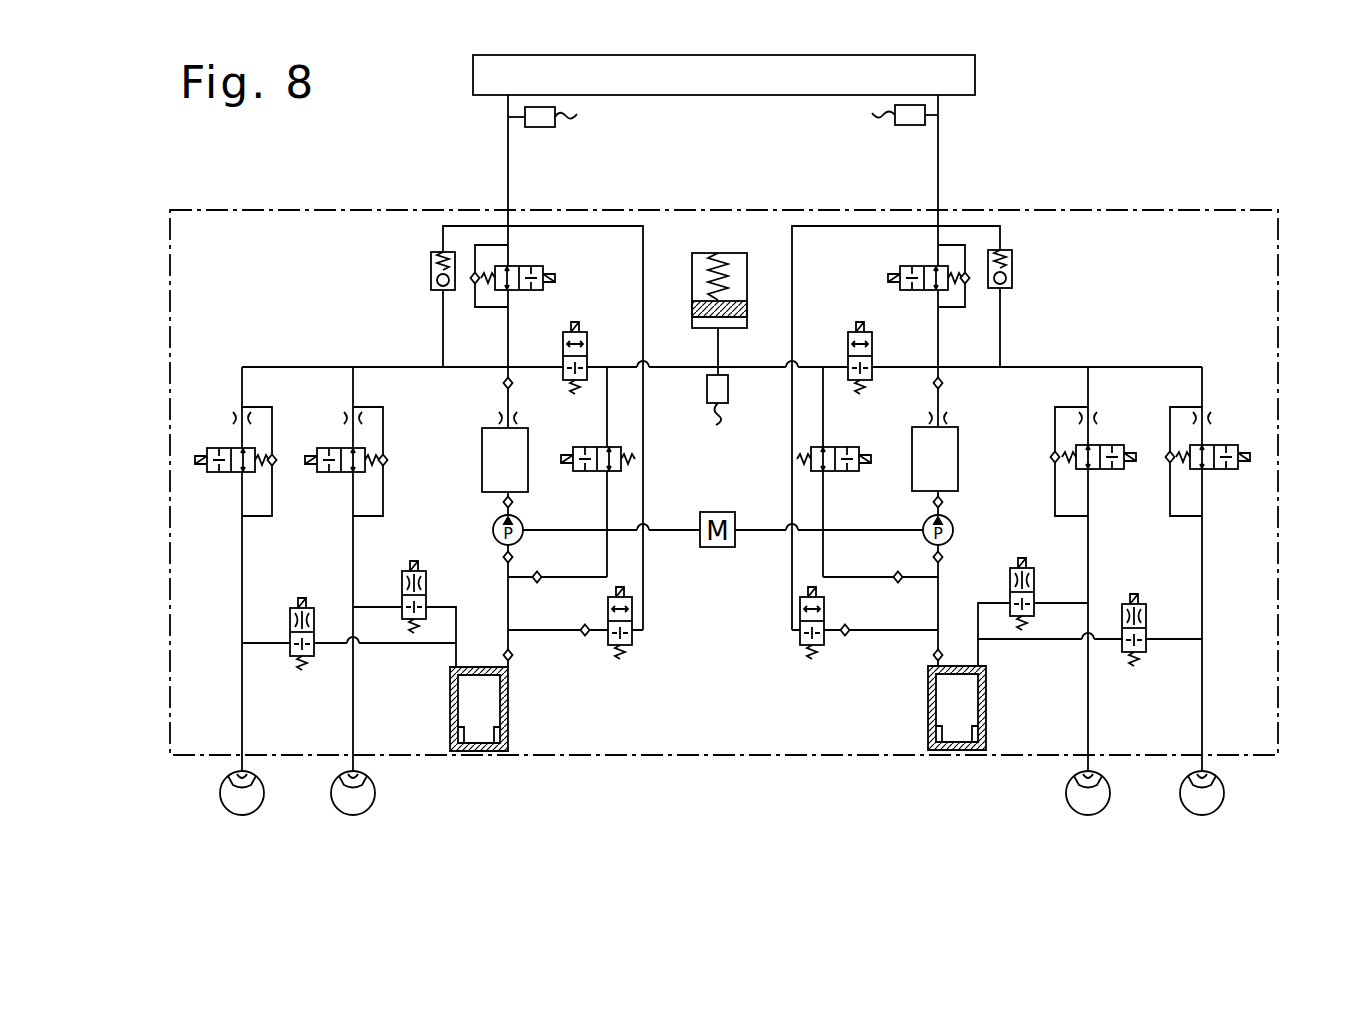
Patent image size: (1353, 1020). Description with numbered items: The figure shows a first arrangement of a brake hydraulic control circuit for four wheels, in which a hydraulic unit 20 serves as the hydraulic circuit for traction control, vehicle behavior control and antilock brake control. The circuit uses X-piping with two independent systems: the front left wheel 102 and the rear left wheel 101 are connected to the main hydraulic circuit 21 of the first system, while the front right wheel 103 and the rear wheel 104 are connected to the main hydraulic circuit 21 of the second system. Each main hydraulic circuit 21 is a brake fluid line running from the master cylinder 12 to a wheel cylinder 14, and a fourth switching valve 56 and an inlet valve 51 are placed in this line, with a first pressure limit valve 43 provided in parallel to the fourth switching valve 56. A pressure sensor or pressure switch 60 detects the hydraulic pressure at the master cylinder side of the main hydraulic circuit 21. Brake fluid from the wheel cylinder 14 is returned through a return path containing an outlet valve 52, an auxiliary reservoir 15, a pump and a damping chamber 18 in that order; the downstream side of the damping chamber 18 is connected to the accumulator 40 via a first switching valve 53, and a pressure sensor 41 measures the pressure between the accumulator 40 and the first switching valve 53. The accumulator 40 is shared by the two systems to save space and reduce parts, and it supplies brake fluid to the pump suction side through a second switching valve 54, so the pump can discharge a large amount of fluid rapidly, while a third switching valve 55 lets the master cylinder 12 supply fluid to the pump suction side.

The master cylinder 12 is at (975, 80).
The wheel cylinder 14 is at (231, 812).
The auxiliary reservoir 15 is at (508, 700).
The damping chamber 18 is at (482, 458).
The hydraulic unit 20 is at (1283, 252).
The main hydraulic circuit 21 is at (508, 157).
The accumulator 40 is at (737, 253).
The pressure sensor 41 is at (728, 392).
The first pressure limit valve 43 is at (1013, 262).
The inlet valve 51 is at (215, 448).
The outlet valve 52 is at (290, 607).
The first switching valve 53 is at (588, 345).
The second switching valve 54 is at (572, 452).
The third switching valve 55 is at (633, 640).
The fourth switching valve 56 is at (900, 268).
The pressure sensor or pressure switch 60 is at (541, 127).
The rear left wheel 101 is at (367, 811).
The front left wheel 102 is at (256, 811).
The front right wheel 103 is at (1216, 811).
The rear right wheel 104 is at (1102, 811).